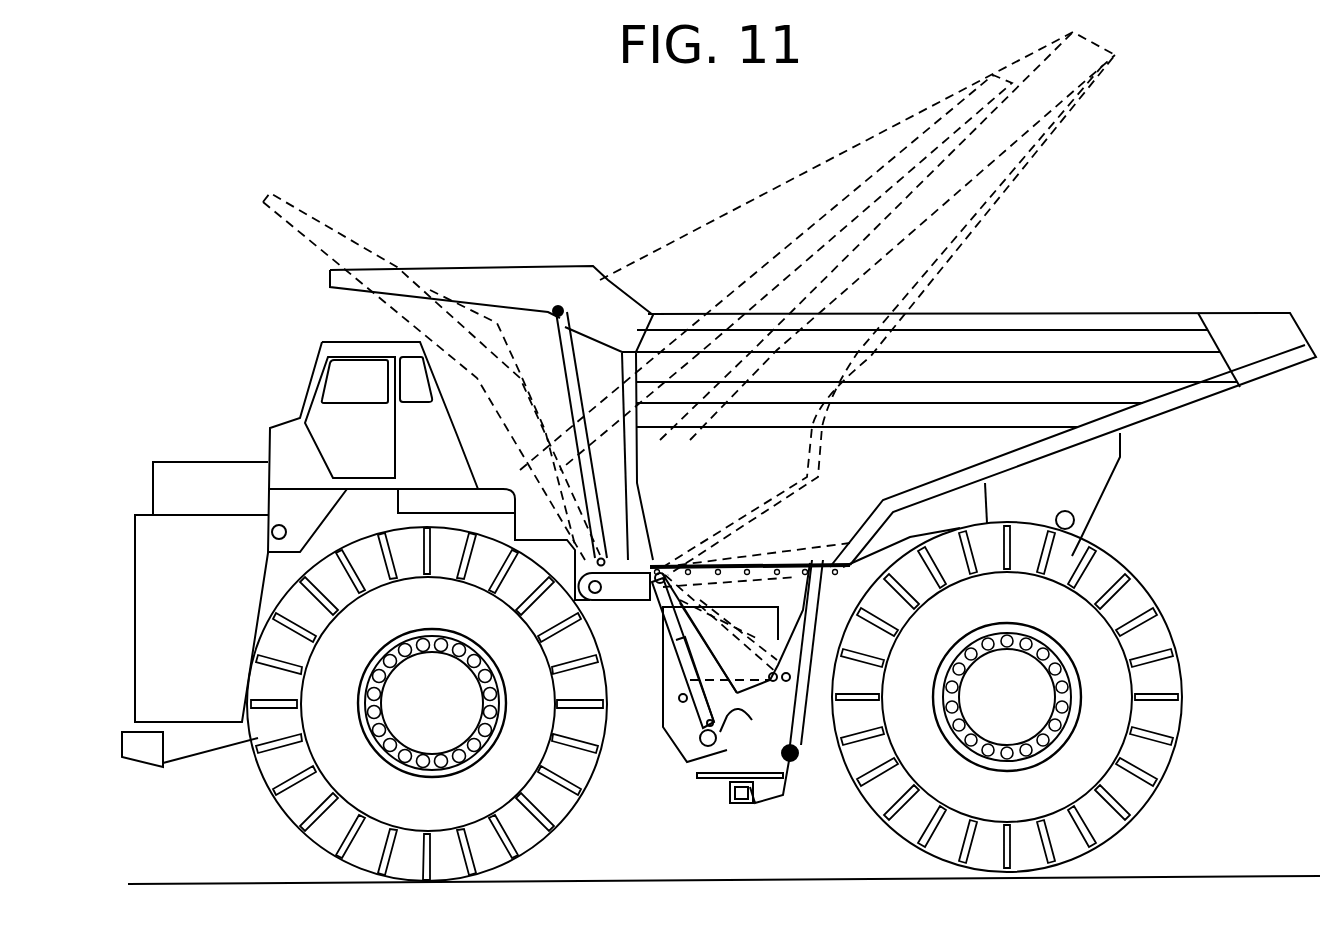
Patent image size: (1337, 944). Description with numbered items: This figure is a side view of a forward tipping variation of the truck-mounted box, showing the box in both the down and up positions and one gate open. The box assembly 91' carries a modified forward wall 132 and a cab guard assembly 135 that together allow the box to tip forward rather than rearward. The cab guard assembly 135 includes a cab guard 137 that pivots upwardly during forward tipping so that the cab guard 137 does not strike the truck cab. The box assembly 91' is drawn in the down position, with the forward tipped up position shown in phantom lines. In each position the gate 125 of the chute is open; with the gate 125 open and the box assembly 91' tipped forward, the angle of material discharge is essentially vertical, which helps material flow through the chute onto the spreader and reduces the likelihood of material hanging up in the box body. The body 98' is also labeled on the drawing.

The box assembly 91' is at (721, 613).
The dump body 98' is at (976, 382).
The gate 125 is at (716, 756).
The forward wall 132 is at (637, 460).
The cab guard assembly 135 is at (467, 247).
The cab guard 137 is at (523, 282).